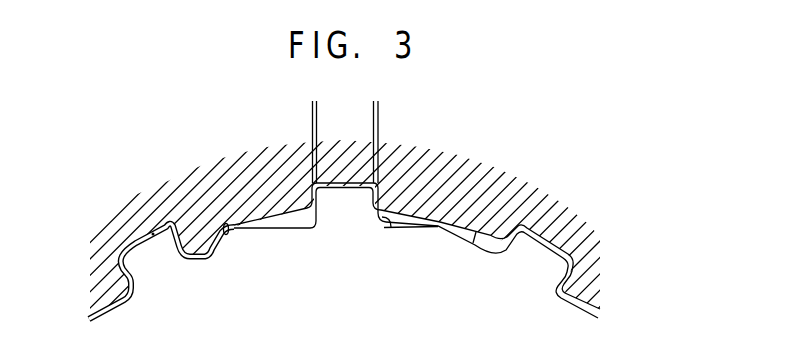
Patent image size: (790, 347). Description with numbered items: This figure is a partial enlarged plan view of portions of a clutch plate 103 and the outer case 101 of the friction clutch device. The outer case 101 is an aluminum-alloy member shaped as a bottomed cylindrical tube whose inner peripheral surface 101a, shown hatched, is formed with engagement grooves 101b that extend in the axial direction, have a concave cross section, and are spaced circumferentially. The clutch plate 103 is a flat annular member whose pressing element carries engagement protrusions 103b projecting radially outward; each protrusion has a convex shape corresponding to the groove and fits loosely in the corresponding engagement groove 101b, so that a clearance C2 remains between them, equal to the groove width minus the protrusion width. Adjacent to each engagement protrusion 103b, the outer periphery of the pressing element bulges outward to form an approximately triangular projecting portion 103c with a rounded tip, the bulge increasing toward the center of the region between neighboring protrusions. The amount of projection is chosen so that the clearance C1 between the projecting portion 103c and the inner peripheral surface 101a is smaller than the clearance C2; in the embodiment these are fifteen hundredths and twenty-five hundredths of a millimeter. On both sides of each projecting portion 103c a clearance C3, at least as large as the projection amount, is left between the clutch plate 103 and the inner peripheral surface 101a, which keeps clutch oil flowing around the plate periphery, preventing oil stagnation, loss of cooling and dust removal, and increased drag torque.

The outer case 101 is at (273, 168).
The inner peripheral surface 101a is at (227, 224).
The engagement grooves 101b is at (153, 234).
The clutch plate 103 is at (599, 313).
The engagement protrusions 103b is at (342, 188).
The projecting portions 103c is at (423, 213).
The clearance C1 is at (480, 222).
The clearance C2 is at (295, 101).
The clearance C3 is at (385, 228).